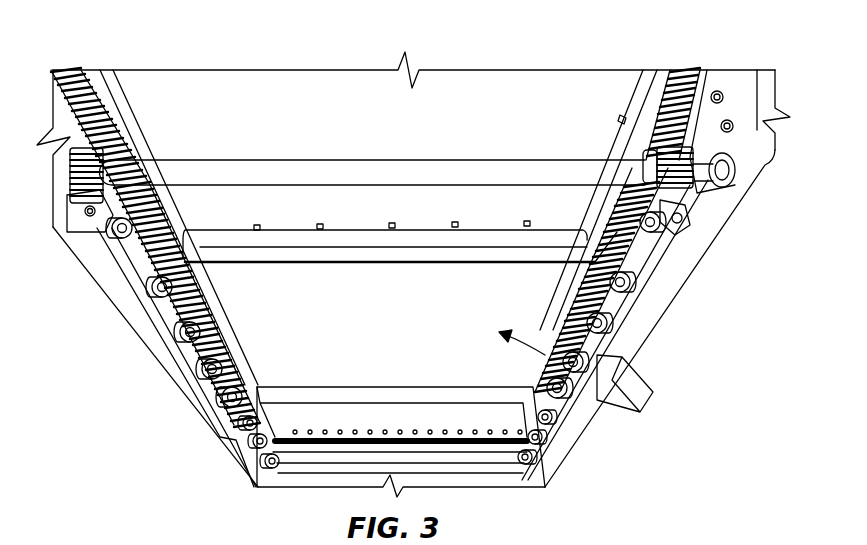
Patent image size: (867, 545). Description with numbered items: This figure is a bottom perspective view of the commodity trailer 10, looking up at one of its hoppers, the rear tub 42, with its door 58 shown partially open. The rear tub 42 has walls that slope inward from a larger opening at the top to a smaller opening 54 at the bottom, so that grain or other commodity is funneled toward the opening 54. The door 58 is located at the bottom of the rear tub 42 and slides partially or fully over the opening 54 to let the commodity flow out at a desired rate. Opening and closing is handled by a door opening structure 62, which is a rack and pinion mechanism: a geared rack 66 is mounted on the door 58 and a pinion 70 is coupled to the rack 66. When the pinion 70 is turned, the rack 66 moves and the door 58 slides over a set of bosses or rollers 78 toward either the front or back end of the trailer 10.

The commodity trailer 10 is at (78, 52).
The rear tub 42 is at (168, 418).
The opening 54 is at (470, 413).
The door 58 is at (572, 362).
The door opening structure 62 is at (531, 150).
The geared rack 66 is at (693, 87).
The pinion 70 is at (680, 225).
The rollers 78 is at (627, 288).